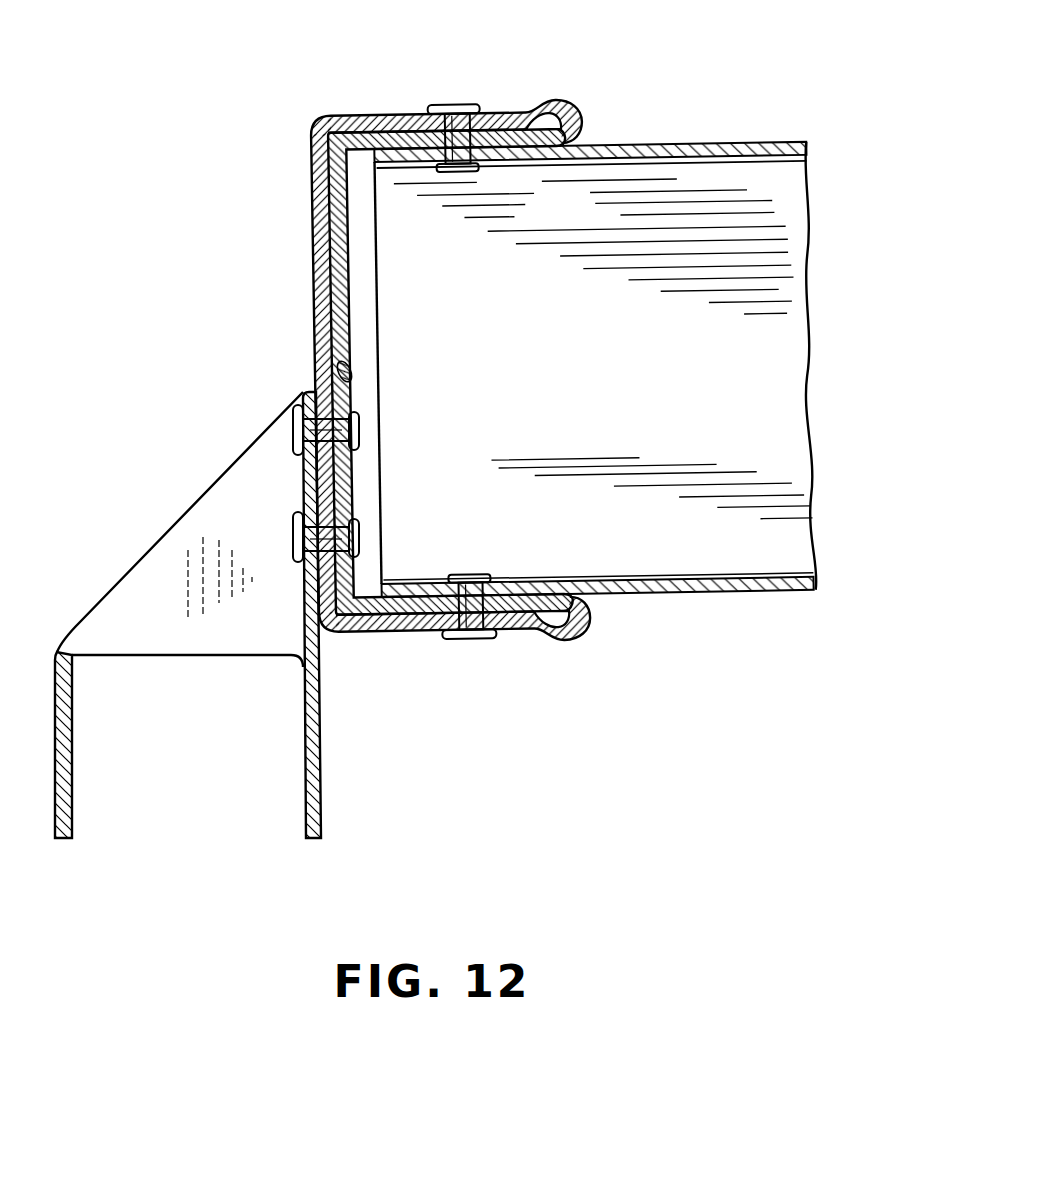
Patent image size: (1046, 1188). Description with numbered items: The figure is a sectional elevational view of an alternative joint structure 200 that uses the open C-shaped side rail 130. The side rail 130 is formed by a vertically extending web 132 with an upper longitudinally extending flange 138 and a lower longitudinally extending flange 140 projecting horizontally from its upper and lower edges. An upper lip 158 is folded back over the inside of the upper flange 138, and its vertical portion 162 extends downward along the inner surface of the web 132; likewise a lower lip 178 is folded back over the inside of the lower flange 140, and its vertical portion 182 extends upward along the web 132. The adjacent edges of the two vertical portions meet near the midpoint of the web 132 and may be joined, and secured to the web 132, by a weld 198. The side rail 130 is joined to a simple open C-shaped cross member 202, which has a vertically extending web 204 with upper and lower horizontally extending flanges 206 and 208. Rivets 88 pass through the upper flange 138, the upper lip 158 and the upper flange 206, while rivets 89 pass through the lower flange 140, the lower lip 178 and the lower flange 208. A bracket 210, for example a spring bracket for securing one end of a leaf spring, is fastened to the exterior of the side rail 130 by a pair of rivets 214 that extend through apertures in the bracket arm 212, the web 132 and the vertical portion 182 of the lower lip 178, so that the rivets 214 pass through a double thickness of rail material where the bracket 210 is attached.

The rivets 88 is at (463, 114).
The rivets 89 is at (470, 640).
The side rail 130 is at (305, 112).
The web 132 is at (318, 240).
The upper longitudinally extending flange 138 is at (397, 114).
The lower longitudinally extending flange 140 is at (388, 632).
The upper longitudinally extending lip 158 is at (495, 139).
The vertical portion 162 is at (340, 225).
The lower lip 178 is at (508, 604).
The vertical portion 182 is at (340, 490).
The weld 198 is at (352, 372).
The joint structure 200 is at (207, 335).
The cross member 202 is at (727, 120).
The web 204 is at (778, 367).
The upper flange 206 is at (758, 152).
The lower flange 208 is at (763, 578).
The bracket 210 is at (145, 592).
The bracket arm 212 is at (320, 797).
The rivets 214 is at (300, 430).